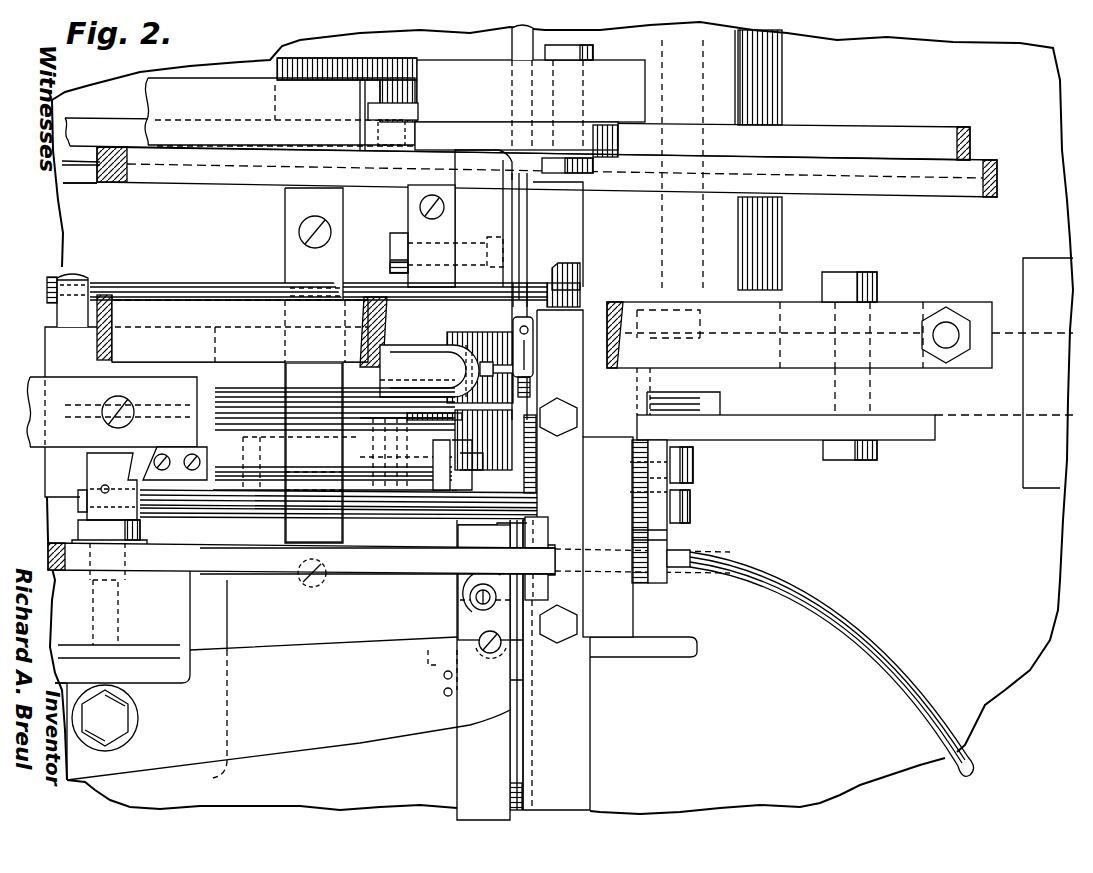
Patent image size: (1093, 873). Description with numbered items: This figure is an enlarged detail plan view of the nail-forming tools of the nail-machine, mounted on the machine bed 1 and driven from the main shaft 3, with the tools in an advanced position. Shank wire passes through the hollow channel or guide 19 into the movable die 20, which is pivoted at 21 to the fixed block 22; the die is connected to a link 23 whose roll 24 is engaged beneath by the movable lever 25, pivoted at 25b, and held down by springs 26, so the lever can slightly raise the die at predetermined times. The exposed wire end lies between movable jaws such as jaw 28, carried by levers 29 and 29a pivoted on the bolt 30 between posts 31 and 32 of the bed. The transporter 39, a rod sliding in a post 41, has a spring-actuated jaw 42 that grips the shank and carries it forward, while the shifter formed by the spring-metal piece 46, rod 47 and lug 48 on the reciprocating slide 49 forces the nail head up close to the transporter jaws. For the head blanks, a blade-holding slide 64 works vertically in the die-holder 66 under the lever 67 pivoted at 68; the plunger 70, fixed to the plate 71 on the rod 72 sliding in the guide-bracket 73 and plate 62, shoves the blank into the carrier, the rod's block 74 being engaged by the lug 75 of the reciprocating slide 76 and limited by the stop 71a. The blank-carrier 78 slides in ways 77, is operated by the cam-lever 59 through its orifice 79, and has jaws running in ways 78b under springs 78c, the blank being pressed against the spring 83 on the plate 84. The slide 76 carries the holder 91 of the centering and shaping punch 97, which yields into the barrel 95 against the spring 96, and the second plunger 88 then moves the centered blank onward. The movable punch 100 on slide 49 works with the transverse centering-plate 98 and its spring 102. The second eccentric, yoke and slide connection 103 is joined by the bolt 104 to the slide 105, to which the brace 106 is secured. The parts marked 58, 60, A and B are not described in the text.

The frame 1 is at (560, 418).
The main shaft 3 is at (40, 412).
The hollow channel or guide 19 is at (185, 180).
The movable die 20 is at (483, 218).
The pivot 21 is at (455, 252).
The fixed block 22 is at (422, 236).
The link 23 is at (420, 115).
The roll 24 is at (380, 133).
The movable lever 25 is at (516, 139).
The pivot of lever 25b is at (577, 127).
The springs 26 is at (280, 112).
The movable jaw 28 is at (552, 222).
The lever 29 is at (547, 172).
The lever 29a is at (517, 139).
The bolt 30 is at (722, 160).
The post 31 is at (745, 243).
The post 32 is at (735, 72).
The transporter 39 is at (528, 220).
The post 41 is at (461, 90).
The spring-actuated jaw 42 is at (512, 300).
The piece of spring metal 46 is at (580, 281).
The rod 47 is at (430, 303).
The lug 48 is at (76, 273).
The reciprocating slide 49 is at (78, 396).
The pins 58 is at (442, 692).
The cam-lever 59 is at (282, 708).
The bolt 60 is at (120, 716).
The plate 62 is at (608, 537).
The block 64 is at (540, 545).
The die-holder 66 is at (556, 560).
The lever 67 is at (465, 567).
The pivot 68 is at (112, 560).
The plunger 70 is at (690, 556).
The plate 71 is at (647, 484).
The stop 71a is at (633, 540).
The rod 72 is at (555, 505).
The guide-bracket 73 is at (314, 365).
The block 74 is at (109, 499).
The lug 75 is at (172, 452).
The reciprocating slide 76 is at (264, 448).
The ways 77 is at (528, 738).
The reciprocating blank-carrier 78 is at (515, 728).
The ways 78b is at (534, 372).
The springs 78c is at (532, 390).
The orifice 79 is at (517, 662).
The spring 83 is at (484, 588).
The plate 84 is at (491, 635).
The second plunger 88 is at (635, 465).
The holder 91 is at (446, 470).
The barrel 95 is at (262, 468).
The spring 96 is at (459, 440).
The centering and shaping punch 97 is at (537, 463).
The transverse centering-plate 98 is at (458, 337).
The movable punch 100 is at (485, 365).
The spring 102 is at (495, 354).
The second eccentric, yoke, and slide connection 103 is at (799, 335).
The bolt 104 is at (870, 385).
The slide 105 is at (714, 391).
The brace 106 is at (786, 416).
The pin A is at (83, 168).
The pipe B is at (895, 683).